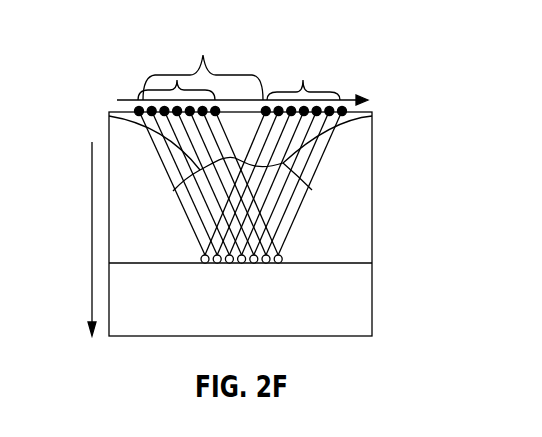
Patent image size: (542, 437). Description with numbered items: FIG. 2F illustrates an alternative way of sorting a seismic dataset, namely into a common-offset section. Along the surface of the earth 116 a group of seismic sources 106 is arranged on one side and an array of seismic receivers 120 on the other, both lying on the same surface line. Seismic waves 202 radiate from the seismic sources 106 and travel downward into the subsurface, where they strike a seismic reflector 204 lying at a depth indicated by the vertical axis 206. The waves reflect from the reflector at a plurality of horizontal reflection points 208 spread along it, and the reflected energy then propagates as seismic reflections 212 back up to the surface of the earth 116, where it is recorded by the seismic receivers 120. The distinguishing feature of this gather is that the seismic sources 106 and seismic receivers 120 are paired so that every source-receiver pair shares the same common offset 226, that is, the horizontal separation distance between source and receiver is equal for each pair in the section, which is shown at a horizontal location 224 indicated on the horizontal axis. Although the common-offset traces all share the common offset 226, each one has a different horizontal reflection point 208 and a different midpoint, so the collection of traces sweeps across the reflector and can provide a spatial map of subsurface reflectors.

The seismic sources 106 is at (177, 82).
The surface of the earth 116 is at (358, 101).
The seismic receivers 120 is at (303, 81).
The seismic waves 202 is at (109, 117).
The seismic reflector 204 is at (163, 266).
The vertical axis 206 is at (88, 234).
The horizontal reflection points 208 is at (292, 268).
The seismic reflections 212 is at (372, 117).
The horizontal location 224 is at (130, 99).
The common offset 226 is at (203, 57).